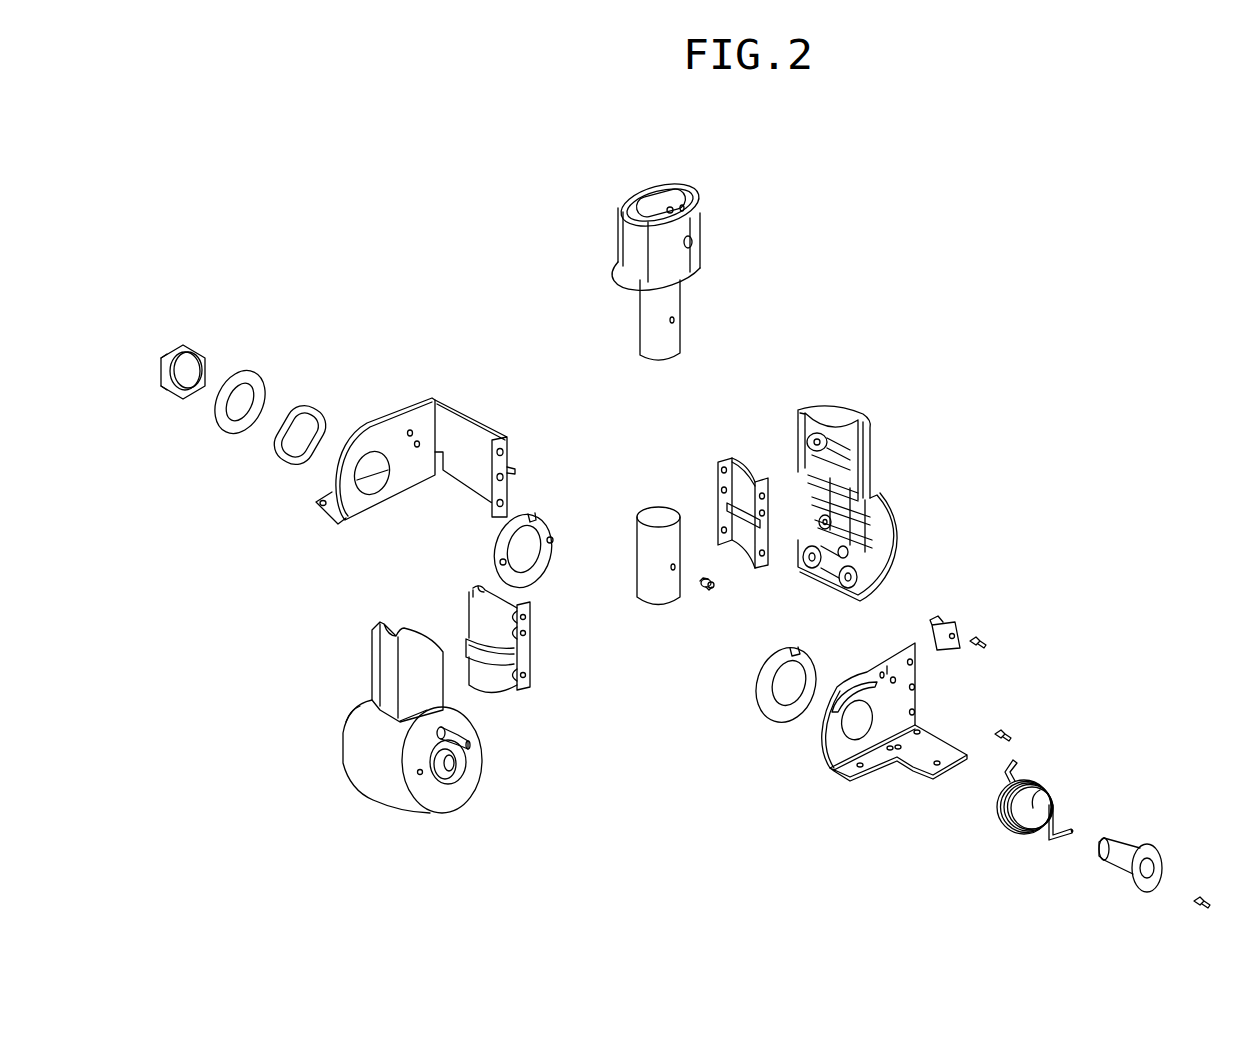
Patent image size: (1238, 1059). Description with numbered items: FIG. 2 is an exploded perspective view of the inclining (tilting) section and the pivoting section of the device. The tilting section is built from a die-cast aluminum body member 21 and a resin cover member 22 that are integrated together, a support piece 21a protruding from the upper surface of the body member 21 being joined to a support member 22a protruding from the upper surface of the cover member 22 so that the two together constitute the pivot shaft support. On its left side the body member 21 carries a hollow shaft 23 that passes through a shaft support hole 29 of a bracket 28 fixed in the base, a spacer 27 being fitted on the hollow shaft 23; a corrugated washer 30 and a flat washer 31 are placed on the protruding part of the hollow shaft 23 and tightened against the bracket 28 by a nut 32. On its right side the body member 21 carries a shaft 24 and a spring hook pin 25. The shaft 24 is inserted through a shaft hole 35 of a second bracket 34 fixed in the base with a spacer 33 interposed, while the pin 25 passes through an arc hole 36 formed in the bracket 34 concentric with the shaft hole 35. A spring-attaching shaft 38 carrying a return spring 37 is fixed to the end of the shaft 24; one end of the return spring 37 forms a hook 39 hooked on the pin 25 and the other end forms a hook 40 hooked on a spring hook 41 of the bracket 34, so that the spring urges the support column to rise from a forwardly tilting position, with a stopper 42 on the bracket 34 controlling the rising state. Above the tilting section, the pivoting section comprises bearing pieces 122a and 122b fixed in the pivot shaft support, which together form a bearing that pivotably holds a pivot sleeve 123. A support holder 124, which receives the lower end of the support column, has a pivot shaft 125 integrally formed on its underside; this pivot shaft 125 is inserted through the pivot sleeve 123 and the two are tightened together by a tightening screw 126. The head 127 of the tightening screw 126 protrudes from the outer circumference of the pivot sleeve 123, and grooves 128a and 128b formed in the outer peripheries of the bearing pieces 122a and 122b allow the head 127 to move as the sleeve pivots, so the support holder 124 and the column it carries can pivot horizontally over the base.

The body member 21 is at (362, 745).
The support piece 21a is at (388, 672).
The cover member 22 is at (897, 537).
The support member 22a is at (868, 478).
The hollow shaft 23 is at (350, 710).
The shaft 24 is at (470, 760).
The spring hook pin 25 is at (470, 738).
The spacer 27 is at (500, 540).
The bracket 28 is at (474, 440).
The shaft support hole 29 is at (368, 457).
The corrugated washer 30 is at (314, 420).
The flat washer 31 is at (259, 386).
The nut 32 is at (200, 350).
The spacer 33 is at (768, 688).
The bracket 34 is at (912, 700).
The shaft hole 35 is at (848, 730).
The arc hole 36 is at (857, 690).
The return spring 37 is at (1030, 780).
The spring-attaching shaft 38 is at (1135, 845).
The hook 39 is at (1010, 767).
The hook 40 is at (1063, 835).
The spring hook 41 is at (907, 765).
The stopper 42 is at (940, 625).
The bearing piece 122a is at (480, 625).
The bearing piece 122b is at (745, 473).
The pivot sleeve 123 is at (645, 557).
The support holder 124 is at (640, 243).
The pivot shaft 125 is at (652, 320).
The tightening screw 126 is at (702, 587).
The head 127 is at (714, 584).
The groove 128a is at (503, 657).
The groove 128b is at (760, 523).